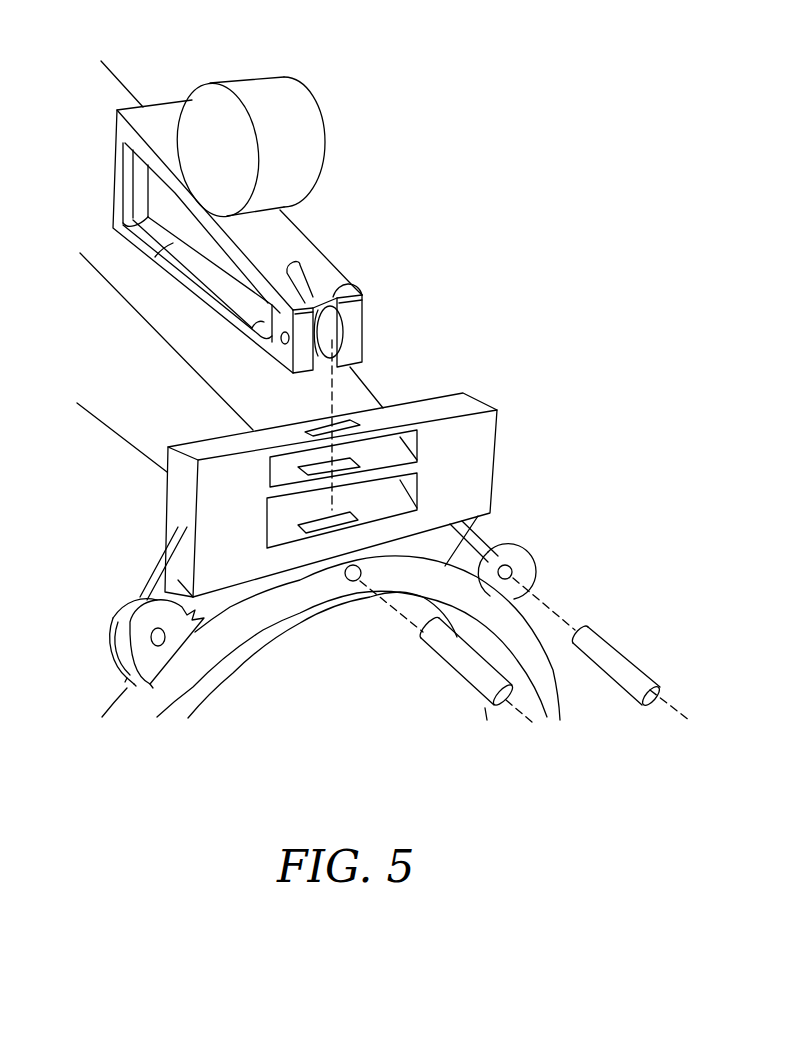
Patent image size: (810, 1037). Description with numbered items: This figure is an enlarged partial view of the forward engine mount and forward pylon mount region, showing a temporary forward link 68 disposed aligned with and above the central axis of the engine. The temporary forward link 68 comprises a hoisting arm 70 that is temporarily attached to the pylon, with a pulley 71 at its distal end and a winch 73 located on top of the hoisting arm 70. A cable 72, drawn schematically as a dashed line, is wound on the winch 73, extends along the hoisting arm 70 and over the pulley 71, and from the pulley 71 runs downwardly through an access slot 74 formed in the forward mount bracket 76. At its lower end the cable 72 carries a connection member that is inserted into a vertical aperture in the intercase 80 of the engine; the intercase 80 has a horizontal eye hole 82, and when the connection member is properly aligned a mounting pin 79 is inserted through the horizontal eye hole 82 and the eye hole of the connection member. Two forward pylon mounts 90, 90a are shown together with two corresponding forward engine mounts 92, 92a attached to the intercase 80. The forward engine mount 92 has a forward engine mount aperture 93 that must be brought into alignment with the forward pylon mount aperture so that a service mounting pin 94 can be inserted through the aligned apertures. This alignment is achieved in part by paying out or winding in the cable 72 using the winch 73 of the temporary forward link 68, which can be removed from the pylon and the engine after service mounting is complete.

The temporary forward link 68 is at (161, 104).
The hoisting arm 70 is at (310, 237).
The pulley 71 is at (350, 285).
The cable 72 is at (332, 390).
The winch 73 is at (320, 113).
The access slot 74 is at (363, 468).
The forward mount bracket 76 is at (487, 400).
The mounting pin 79 is at (447, 670).
The intercase 80 is at (190, 717).
The horizontal eye hole 82 is at (352, 583).
The forward pylon mount 90 is at (500, 527).
The forward pylon mount 90a is at (157, 573).
The forward engine mount 92 is at (517, 547).
The forward engine mount 92a is at (113, 610).
The forward engine mount aperture 93 is at (513, 566).
The service mounting pin 94 is at (627, 647).